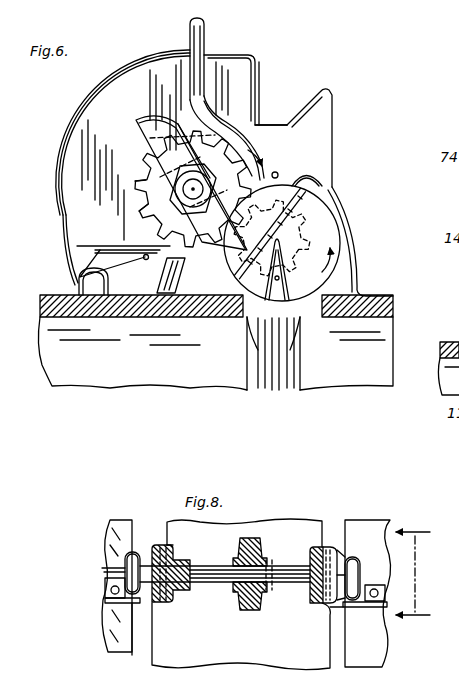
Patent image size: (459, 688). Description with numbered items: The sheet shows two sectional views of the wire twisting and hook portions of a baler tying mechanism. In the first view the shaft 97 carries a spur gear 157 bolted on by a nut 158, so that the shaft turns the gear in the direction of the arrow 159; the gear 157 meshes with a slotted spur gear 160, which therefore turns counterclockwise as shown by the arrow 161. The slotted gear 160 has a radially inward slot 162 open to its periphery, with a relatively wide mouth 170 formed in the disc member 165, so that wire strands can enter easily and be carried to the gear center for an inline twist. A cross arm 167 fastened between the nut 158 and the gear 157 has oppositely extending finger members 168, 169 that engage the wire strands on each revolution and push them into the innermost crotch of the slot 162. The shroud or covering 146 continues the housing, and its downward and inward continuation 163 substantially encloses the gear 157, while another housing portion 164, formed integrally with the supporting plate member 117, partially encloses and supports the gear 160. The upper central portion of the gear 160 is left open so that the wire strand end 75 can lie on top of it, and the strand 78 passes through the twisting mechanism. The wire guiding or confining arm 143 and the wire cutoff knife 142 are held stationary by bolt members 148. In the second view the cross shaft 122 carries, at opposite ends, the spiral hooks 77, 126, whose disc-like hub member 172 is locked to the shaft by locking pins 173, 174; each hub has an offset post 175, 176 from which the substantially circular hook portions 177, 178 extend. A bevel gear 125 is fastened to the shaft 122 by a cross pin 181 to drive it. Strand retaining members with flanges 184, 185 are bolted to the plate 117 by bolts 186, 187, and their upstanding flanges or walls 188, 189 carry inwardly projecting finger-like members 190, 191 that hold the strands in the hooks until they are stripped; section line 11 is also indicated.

In FIG. 6, the shroud or covering 146 is at (112, 86).
In FIG. 6, the arrow 159 is at (227, 147).
In FIG. 6, the wire guiding or confining arm 143 is at (332, 90).
In FIG. 6, the downward and inward continuation of the enlarged housing portion 163 is at (240, 118).
In FIG. 6, the shaft 97 is at (183, 190).
In FIG. 6, the finger member 168 is at (137, 128).
In FIG. 6, the cross arm 167 is at (156, 110).
In FIG. 6, the spur gear 157 is at (133, 171).
In FIG. 6, the nut 158 is at (160, 210).
In FIG. 6, the slotted spur gear 160 is at (345, 200).
In FIG. 6, the housing portion 164 is at (331, 192).
In FIG. 6, the disc member 165 is at (306, 195).
In FIG. 6, the wire strand end 75 is at (275, 172).
In FIG. 6, the slot 162 is at (347, 233).
In FIG. 6, the arrow 161 is at (343, 260).
In FIG. 6, the mouth 170 is at (300, 300).
In FIG. 6, the supporting plate member 117 is at (73, 318).
In FIG. 6, the wire strand 78 is at (277, 283).
In FIG. 6, the bolt members 148 is at (80, 290).
In FIG. 6, the wire cutoff knife 142 is at (146, 265).
In FIG. 6, the finger member 169 is at (207, 300).
In FIG. 8, the post 176 is at (132, 525).
In FIG. 8, the spiral hook 126 is at (125, 568).
In FIG. 8, the hook portion 178 is at (104, 572).
In FIG. 8, the flange 185 is at (110, 596).
In FIG. 8, the bolt 187 is at (111, 592).
In FIG. 8, the upstanding flange or wall 189 is at (120, 603).
In FIG. 8, the finger-like member 191 is at (136, 605).
In FIG. 8, the disc-like hub member 172 is at (160, 545).
In FIG. 8, the cross shaft 122 is at (204, 584).
In FIG. 8, the bevel gear 125 is at (241, 594).
In FIG. 8, the locking pin 174 is at (180, 560).
In FIG. 8, the cross pin 181 is at (265, 598).
In FIG. 8, the locking pin 173 is at (312, 553).
In FIG. 8, the post 175 is at (353, 555).
In FIG. 8, the spiral hook 77 is at (364, 593).
In FIG. 8, the hook portion 177 is at (360, 578).
In FIG. 8, the flange 184 is at (385, 592).
In FIG. 8, the bolt 186 is at (374, 598).
In FIG. 8, the finger-like member 190 is at (343, 604).
In FIG. 8, the upstanding flange or wall 188 is at (370, 603).
In FIG. 8, the section line 11 is at (413, 578).